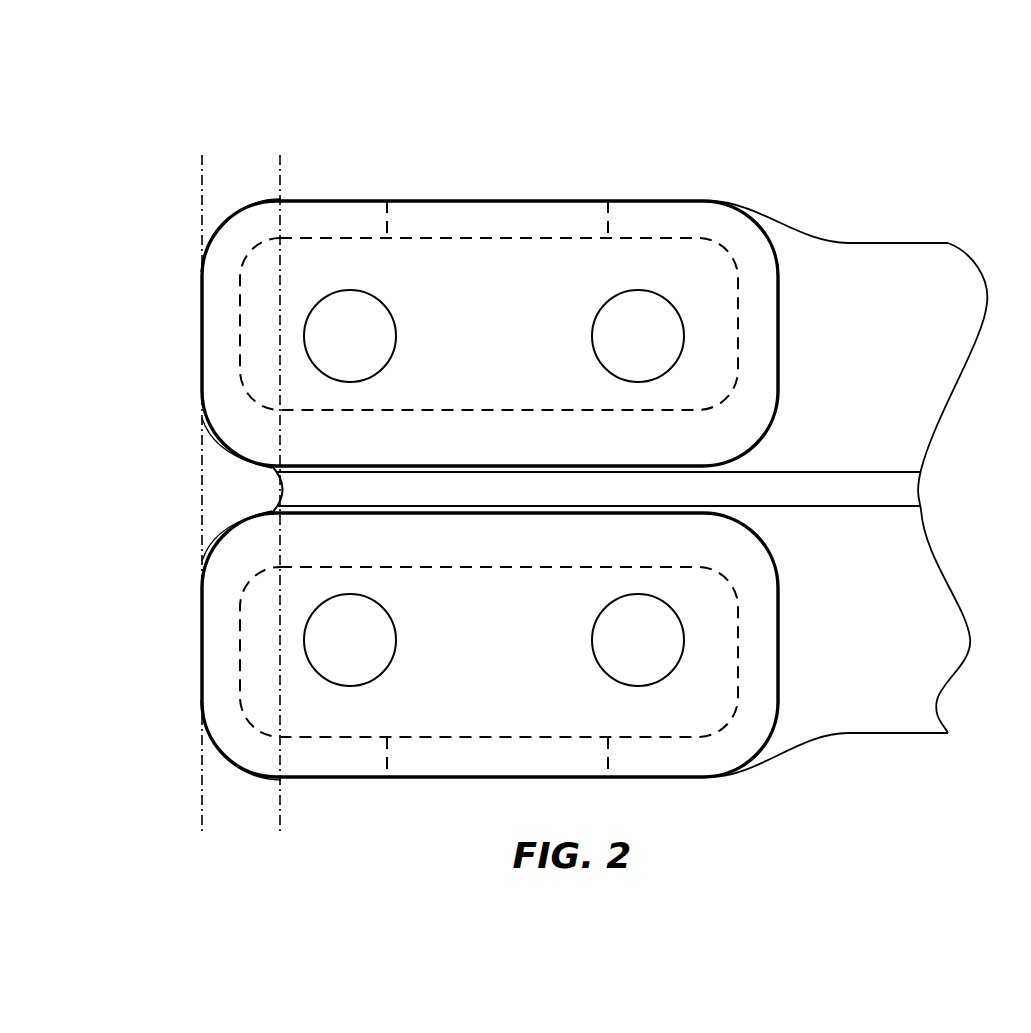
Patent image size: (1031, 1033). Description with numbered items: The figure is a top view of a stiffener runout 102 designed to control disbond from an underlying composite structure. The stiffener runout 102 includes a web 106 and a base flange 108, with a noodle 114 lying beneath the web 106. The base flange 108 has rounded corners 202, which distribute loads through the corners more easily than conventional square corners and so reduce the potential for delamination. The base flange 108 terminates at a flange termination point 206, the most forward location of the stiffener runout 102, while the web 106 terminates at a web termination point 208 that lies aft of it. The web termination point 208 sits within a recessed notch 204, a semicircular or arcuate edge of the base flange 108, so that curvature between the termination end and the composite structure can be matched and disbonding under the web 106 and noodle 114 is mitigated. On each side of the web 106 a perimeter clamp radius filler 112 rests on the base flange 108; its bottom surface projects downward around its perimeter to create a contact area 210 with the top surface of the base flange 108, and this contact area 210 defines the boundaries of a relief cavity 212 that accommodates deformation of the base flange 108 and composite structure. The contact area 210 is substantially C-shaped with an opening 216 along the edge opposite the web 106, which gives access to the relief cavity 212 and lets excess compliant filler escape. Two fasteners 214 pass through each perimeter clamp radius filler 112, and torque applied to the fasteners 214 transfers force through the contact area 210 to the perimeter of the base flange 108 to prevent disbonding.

The stiffener runout 102 is at (100, 145).
The web 106 is at (900, 493).
The base flange 108 is at (745, 208).
The perimeter clamp radius filler 112 is at (207, 312).
The noodle 114 is at (349, 504).
The rounded corners 202 is at (218, 222).
The recessed notch 204 is at (250, 490).
The flange termination point 206 is at (202, 483).
The web termination point 208 is at (280, 483).
The contact area 210 is at (312, 229).
The relief cavity 212 is at (472, 344).
The fasteners 214 is at (334, 347).
The opening 216 is at (472, 229).